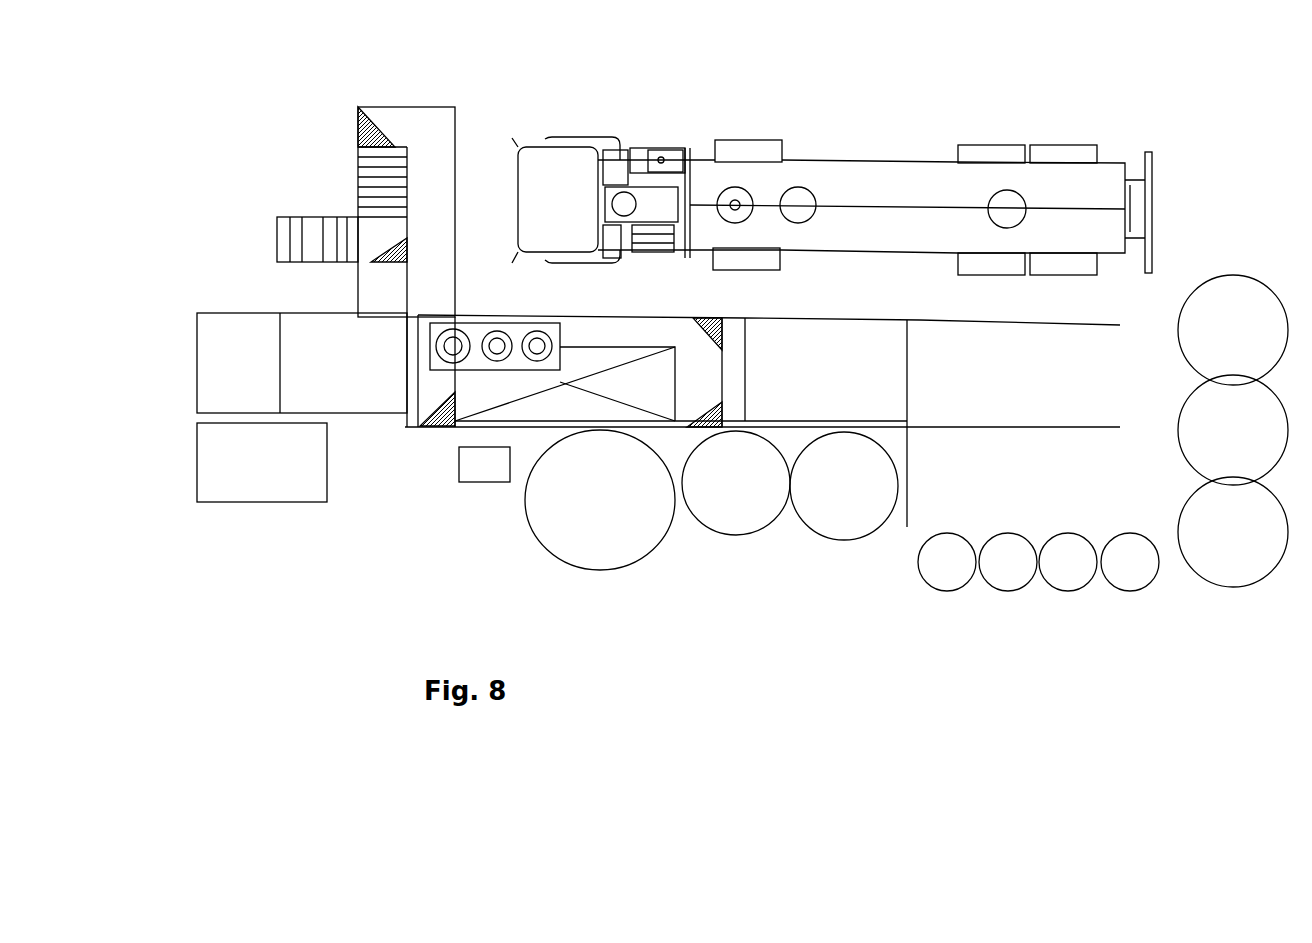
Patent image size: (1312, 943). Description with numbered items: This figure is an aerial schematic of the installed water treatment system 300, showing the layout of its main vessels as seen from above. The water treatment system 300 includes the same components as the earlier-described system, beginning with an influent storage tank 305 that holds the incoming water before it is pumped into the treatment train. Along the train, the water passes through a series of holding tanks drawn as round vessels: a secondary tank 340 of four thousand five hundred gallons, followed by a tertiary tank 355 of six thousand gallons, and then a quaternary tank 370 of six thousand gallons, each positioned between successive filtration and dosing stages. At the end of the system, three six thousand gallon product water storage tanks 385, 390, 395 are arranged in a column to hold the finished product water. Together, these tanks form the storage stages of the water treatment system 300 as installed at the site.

The water treatment system 300 is at (192, 127).
The influent storage tank 305 is at (205, 472).
The secondary tank 340 is at (565, 502).
The tertiary tank 355 is at (740, 482).
The quaternary tank 370 is at (848, 507).
The product water storage tank 385 is at (1210, 343).
The product water storage tank 390 is at (1210, 445).
The product water storage tank 395 is at (1210, 548).